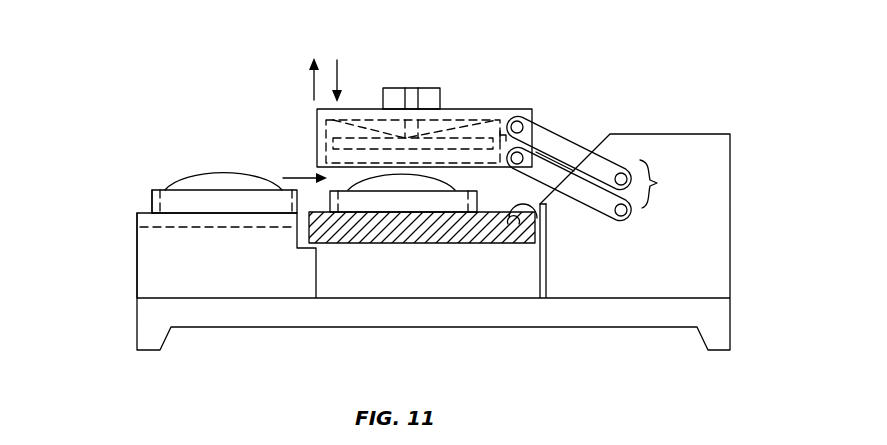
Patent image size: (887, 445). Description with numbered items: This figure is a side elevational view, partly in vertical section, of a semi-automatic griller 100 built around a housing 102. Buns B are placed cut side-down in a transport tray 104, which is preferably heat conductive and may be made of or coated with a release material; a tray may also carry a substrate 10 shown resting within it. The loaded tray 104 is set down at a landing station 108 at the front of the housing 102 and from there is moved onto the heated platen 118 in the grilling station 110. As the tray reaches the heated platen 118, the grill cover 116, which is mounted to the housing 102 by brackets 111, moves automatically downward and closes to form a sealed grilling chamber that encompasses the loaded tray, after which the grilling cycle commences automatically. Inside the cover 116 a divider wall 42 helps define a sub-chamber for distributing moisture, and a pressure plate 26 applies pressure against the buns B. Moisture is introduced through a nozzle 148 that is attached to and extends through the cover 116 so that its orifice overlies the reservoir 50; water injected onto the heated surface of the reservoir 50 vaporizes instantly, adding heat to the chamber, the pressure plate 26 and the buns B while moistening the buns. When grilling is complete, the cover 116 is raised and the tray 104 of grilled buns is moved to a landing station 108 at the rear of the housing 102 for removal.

The griller 100 is at (148, 102).
The housing 102 is at (690, 152).
The transport tray 104 is at (147, 186).
The substrate 10 is at (170, 200).
The landing station 108 is at (202, 218).
The grilling station 110 is at (300, 154).
The pressure plate 26 is at (363, 119).
The grill cover 116 is at (447, 108).
The divider wall 42 is at (497, 99).
The nozzle 148 is at (546, 132).
The brackets 111 is at (660, 183).
The reservoir 50 is at (546, 210).
The heated platen 118 is at (357, 231).
The buns B is at (215, 183).